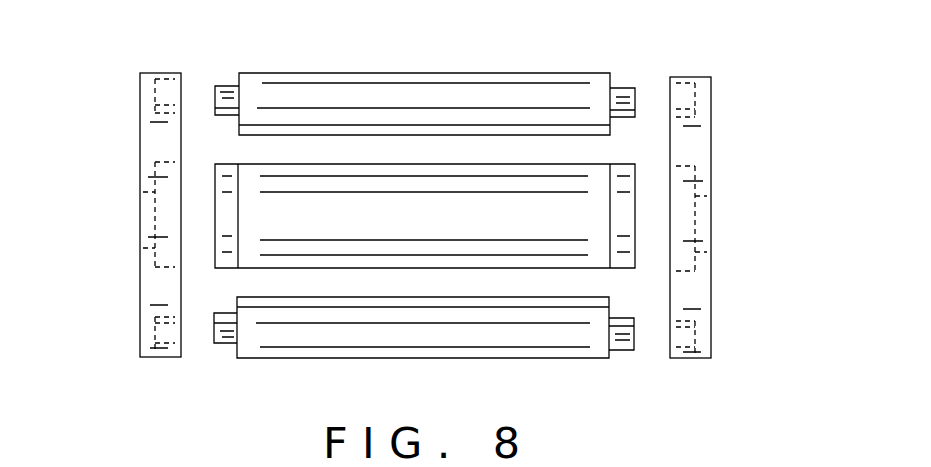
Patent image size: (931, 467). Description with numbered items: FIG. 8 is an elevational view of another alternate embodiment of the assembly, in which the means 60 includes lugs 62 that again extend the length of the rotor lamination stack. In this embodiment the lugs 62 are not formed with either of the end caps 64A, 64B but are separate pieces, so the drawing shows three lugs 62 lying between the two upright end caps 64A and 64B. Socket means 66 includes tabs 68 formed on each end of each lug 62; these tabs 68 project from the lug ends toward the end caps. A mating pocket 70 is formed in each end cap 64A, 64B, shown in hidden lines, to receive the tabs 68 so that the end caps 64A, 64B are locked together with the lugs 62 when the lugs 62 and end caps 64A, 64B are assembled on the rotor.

The means 60 is at (748, 219).
The lugs 62 is at (423, 73).
The end cap 64A is at (140, 172).
The end cap 64B is at (712, 118).
The socket means 66 is at (226, 50).
The end tabs 68 is at (215, 86).
The pocket 70 is at (158, 75).